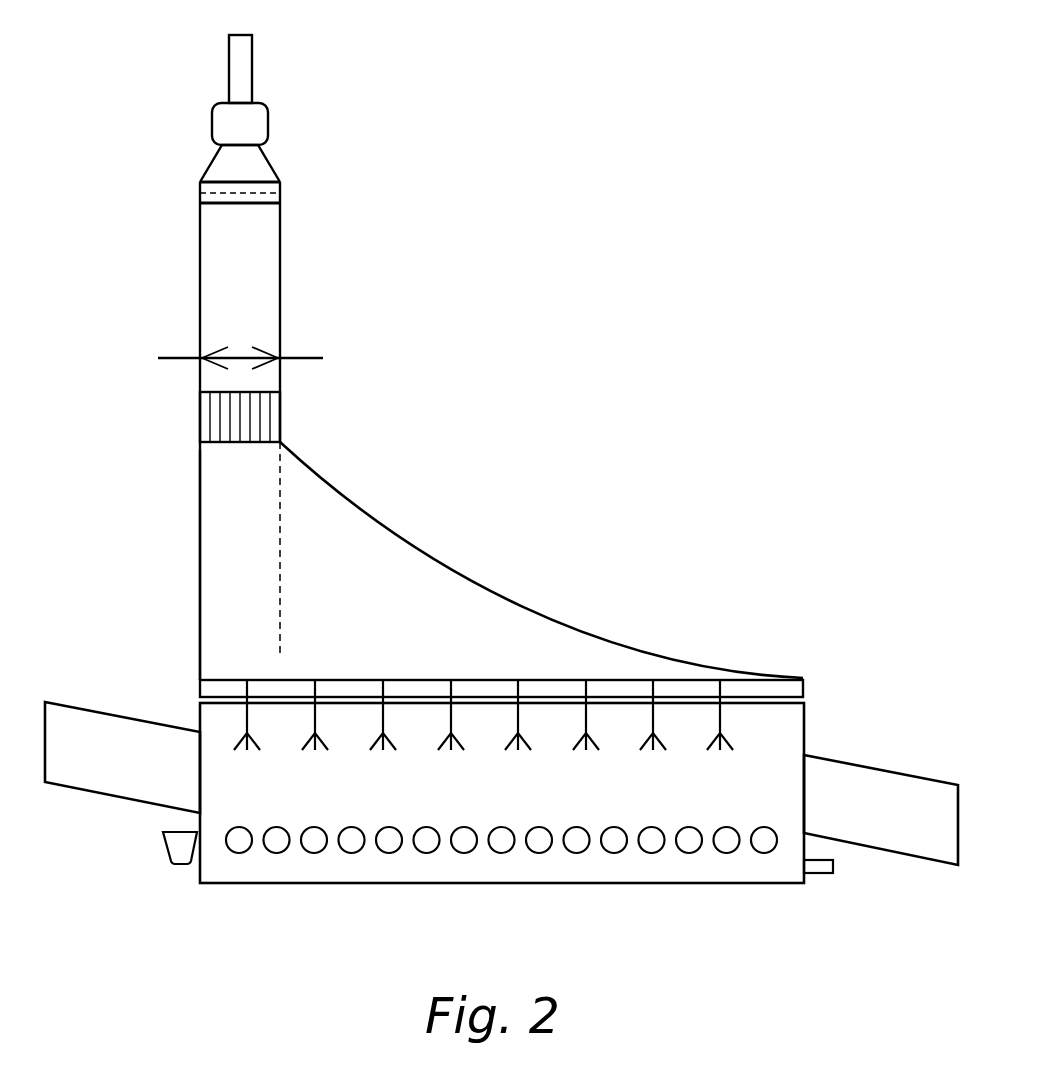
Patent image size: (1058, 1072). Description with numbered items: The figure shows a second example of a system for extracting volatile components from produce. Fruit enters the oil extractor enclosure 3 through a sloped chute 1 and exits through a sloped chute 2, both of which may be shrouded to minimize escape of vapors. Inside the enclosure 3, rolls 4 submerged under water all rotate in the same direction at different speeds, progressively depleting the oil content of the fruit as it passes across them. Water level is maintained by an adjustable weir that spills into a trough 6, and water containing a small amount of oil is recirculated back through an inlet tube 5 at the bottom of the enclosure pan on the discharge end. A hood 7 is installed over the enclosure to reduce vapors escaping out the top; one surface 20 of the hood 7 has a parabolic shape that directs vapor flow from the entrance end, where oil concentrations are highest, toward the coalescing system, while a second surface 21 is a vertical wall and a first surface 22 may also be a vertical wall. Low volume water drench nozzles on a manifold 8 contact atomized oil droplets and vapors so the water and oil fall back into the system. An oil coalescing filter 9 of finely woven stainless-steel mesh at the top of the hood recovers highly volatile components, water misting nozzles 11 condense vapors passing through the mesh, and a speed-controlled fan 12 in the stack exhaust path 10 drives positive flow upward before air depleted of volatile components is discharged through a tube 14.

The sloped chute 1 is at (122, 732).
The sloped chute 2 is at (870, 793).
The oil extractor enclosure 3 is at (378, 893).
The rolls 4 is at (315, 840).
The inlet tube 5 is at (818, 873).
The trough 6 is at (178, 846).
The hood 7 is at (440, 604).
The manifold 8 is at (552, 668).
The oil coalescing filter 9 is at (257, 415).
The stack exhaust path 10 is at (248, 245).
The water misting nozzles 11 is at (298, 358).
The speed-controlled fan 12 is at (252, 122).
The tube 14 is at (237, 67).
The surface of the hood 20 is at (505, 598).
The second surface of the hood 21 is at (200, 568).
The first surface of the hood 22 is at (280, 545).